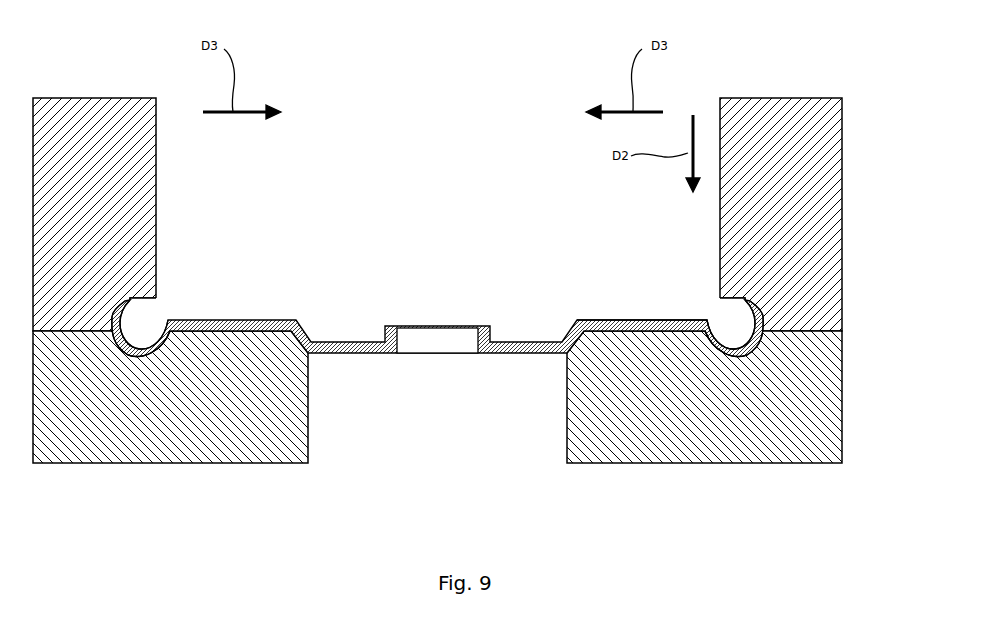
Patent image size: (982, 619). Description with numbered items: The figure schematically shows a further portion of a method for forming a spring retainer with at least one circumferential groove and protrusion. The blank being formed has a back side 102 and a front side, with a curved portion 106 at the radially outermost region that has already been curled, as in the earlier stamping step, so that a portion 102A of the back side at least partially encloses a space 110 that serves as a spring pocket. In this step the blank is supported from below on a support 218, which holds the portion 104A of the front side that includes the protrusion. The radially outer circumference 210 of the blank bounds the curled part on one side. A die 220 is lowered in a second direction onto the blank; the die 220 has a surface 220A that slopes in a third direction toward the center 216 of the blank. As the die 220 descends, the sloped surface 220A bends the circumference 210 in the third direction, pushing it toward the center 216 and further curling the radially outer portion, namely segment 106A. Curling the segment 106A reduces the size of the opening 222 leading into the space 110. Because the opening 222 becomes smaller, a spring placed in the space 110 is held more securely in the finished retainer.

The die 220 is at (101, 98).
The lower support block 218 is at (110, 417).
The back side 102 is at (356, 340).
The center of the blank 216 is at (443, 320).
The space 110 is at (142, 320).
The curved portion 106 is at (110, 353).
The portion of front side 104A is at (167, 350).
The radially outer circumference 210 is at (125, 301).
The opening 222 is at (707, 320).
The portion of back side 102A is at (725, 310).
The surface 220A is at (763, 307).
The segment 106A is at (765, 343).